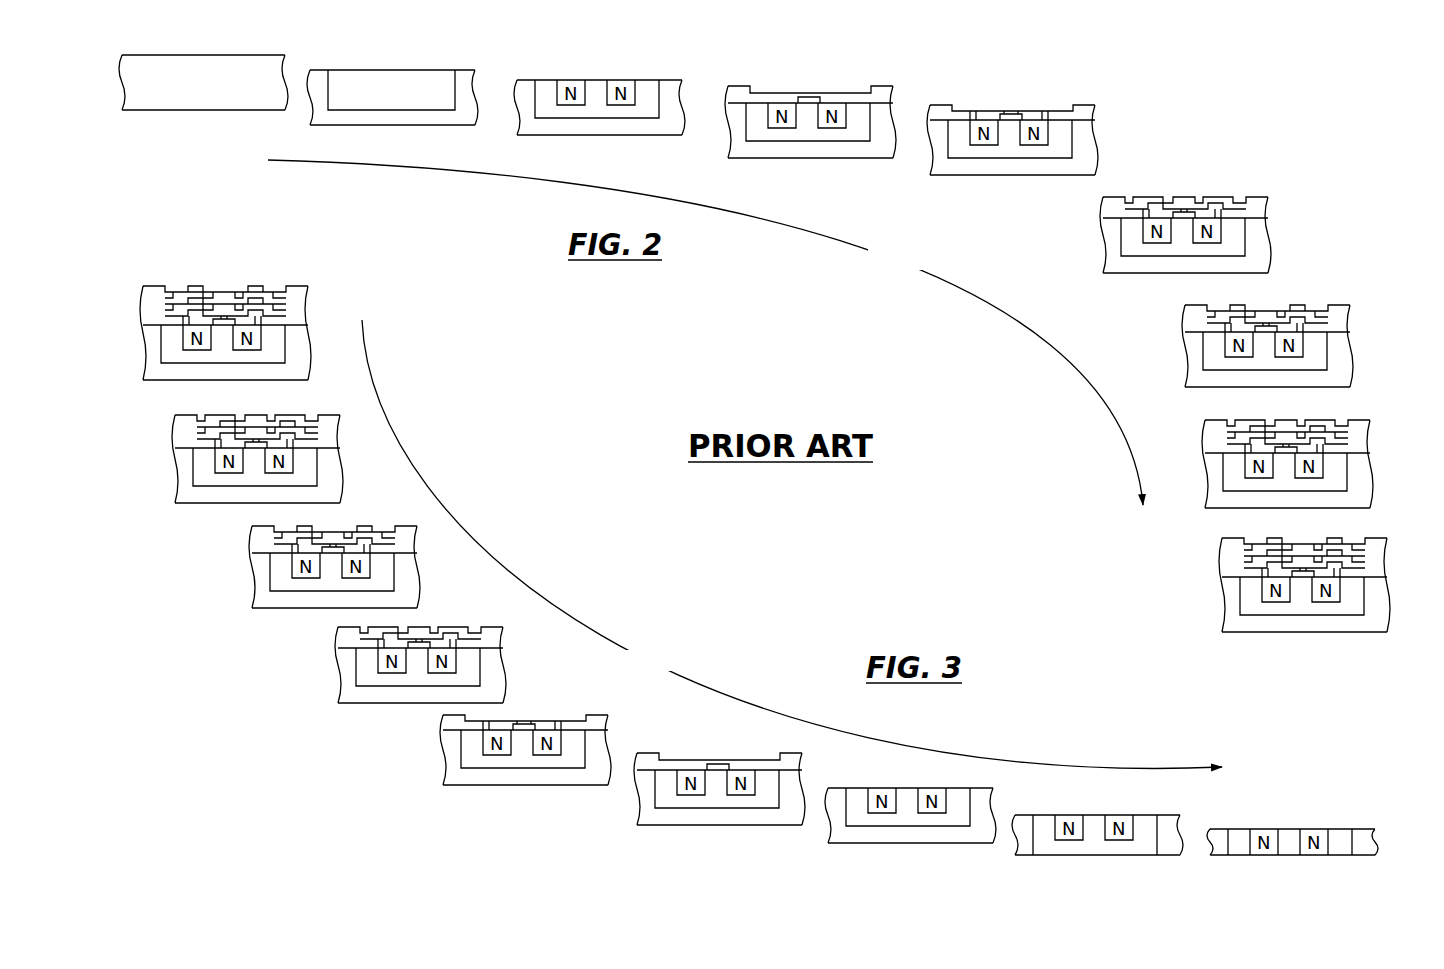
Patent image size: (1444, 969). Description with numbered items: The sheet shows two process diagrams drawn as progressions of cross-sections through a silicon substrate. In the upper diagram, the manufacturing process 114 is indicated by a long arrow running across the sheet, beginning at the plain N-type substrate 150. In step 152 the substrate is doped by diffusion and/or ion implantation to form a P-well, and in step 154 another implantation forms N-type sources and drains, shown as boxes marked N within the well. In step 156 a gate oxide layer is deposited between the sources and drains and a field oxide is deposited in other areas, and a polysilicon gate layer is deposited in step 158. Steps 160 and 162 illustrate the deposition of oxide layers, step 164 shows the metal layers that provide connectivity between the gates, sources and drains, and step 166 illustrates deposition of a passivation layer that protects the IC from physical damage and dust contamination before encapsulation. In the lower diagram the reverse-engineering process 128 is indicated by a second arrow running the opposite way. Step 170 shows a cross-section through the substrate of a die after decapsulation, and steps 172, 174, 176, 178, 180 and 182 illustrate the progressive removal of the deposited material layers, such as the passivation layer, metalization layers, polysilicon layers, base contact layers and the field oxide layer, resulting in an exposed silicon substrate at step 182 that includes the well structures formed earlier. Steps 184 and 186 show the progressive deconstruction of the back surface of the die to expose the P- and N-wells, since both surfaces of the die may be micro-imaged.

In FIG. 2, the N-substrate 150 is at (192, 122).
In FIG. 2, the P-well doping step 152 is at (438, 60).
In FIG. 2, the source and drain implantation step 154 is at (642, 64).
In FIG. 2, the oxide deposition step 156 is at (822, 74).
In FIG. 2, the polysilicon gate deposition step 158 is at (1048, 90).
In FIG. 2, the oxide layer deposition step 160 is at (1208, 180).
In FIG. 2, the oxide layer deposition step 162 is at (1320, 289).
In FIG. 2, the metal layer deposition step 164 is at (1376, 409).
In FIG. 2, the passivation layer deposition step 166 is at (1212, 582).
In FIG. 2, the manufacturing process 114 is at (1070, 352).
In FIG. 3, the decapsulated die cross-section step 170 is at (233, 266).
In FIG. 3, the layer removal step 172 is at (162, 465).
In FIG. 3, the layer removal step 174 is at (242, 580).
In FIG. 3, the layer removal step 176 is at (332, 682).
In FIG. 3, the layer removal step 178 is at (434, 768).
In FIG. 3, the layer removal step 180 is at (632, 820).
In FIG. 3, the exposed substrate step 182 is at (864, 850).
In FIG. 3, the back surface deconstruction step 184 is at (1047, 864).
In FIG. 3, the back surface deconstruction step 186 is at (1343, 821).
In FIG. 3, the reverse-engineering process 128 is at (467, 530).